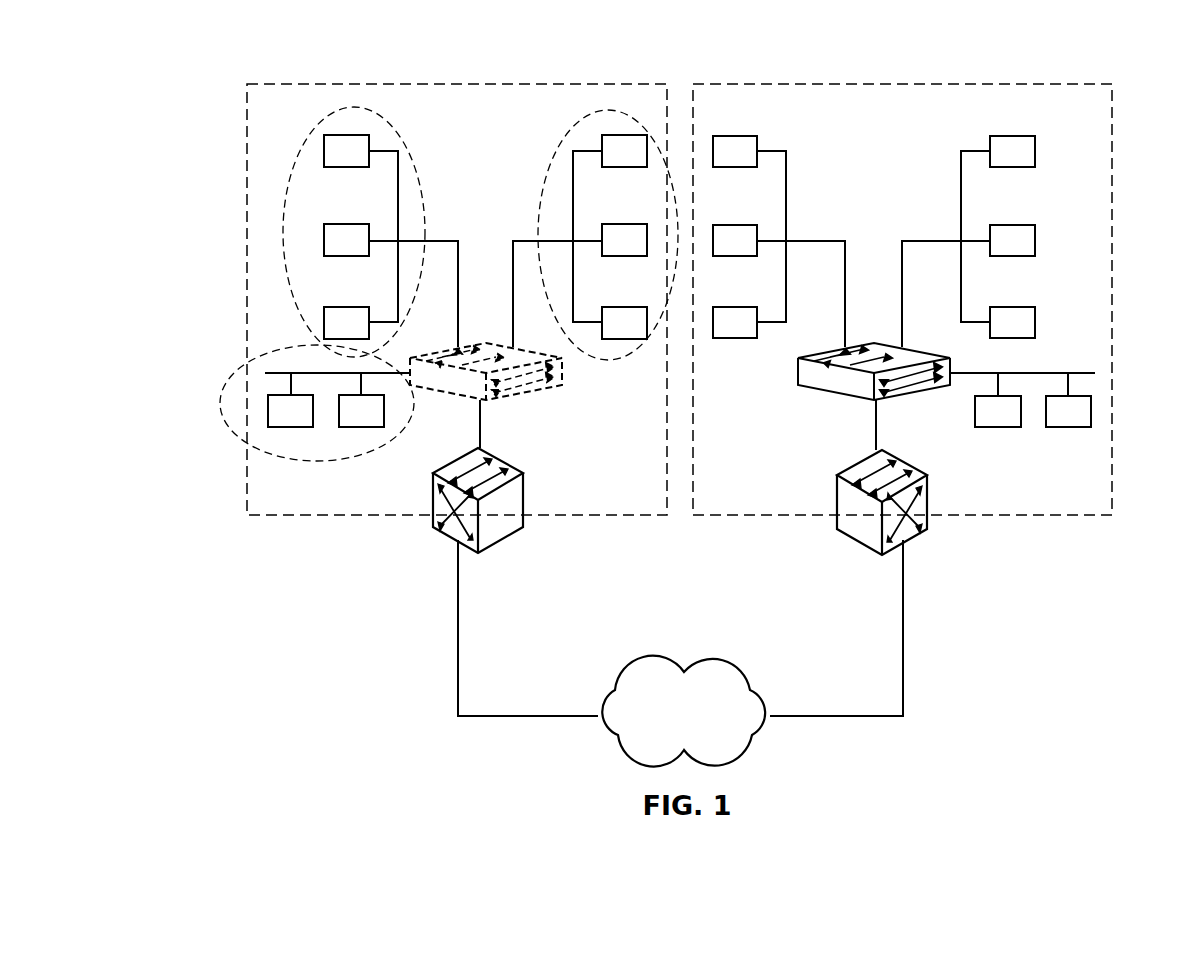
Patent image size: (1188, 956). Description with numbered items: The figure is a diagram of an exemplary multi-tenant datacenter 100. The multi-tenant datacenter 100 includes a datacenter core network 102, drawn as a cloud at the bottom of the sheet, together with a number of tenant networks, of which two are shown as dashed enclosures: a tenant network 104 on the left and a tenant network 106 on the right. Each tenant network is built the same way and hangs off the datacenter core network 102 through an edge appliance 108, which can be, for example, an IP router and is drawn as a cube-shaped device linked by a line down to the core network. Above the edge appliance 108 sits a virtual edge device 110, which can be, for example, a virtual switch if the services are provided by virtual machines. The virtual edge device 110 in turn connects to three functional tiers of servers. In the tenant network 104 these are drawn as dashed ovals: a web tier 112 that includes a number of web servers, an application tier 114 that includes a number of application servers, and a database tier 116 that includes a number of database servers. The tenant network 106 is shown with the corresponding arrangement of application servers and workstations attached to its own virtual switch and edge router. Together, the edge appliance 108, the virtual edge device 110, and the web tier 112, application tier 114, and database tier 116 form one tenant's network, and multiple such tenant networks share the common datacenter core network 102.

The multi-tenant datacenter 100 is at (977, 627).
The datacenter core network 102 is at (683, 711).
The tenant network 104 is at (247, 210).
The tenant network 106 is at (1112, 241).
The edge appliance 108 is at (523, 473).
The virtual edge device 110 is at (563, 360).
The web tier 112 is at (220, 408).
The application tier 114 is at (397, 130).
The database tier 116 is at (557, 152).